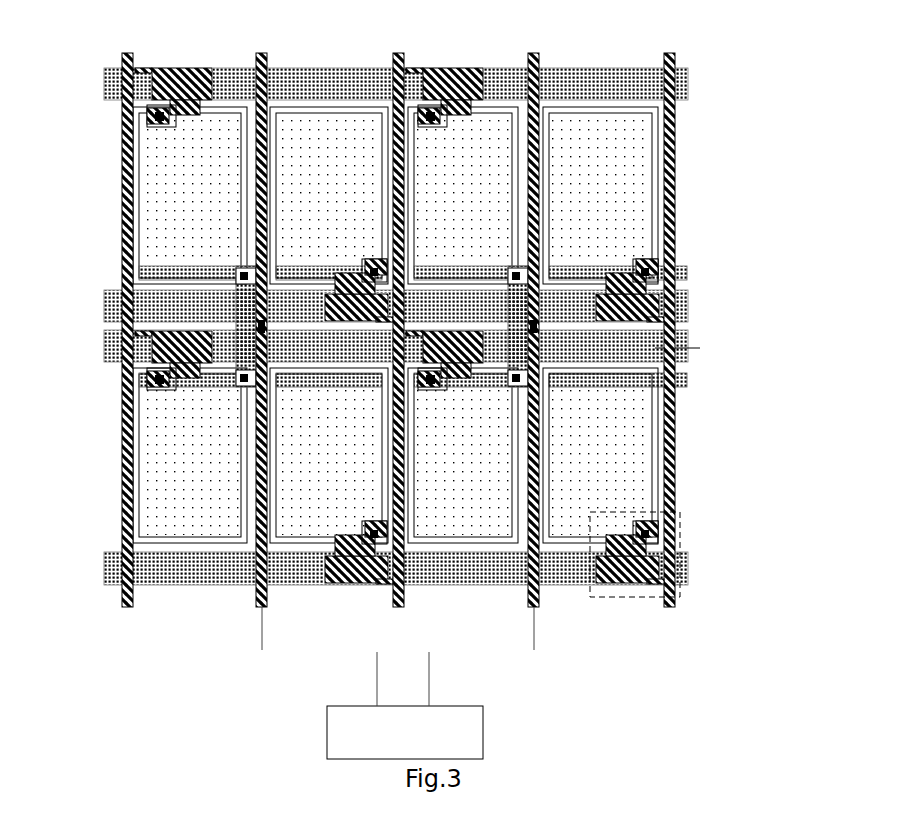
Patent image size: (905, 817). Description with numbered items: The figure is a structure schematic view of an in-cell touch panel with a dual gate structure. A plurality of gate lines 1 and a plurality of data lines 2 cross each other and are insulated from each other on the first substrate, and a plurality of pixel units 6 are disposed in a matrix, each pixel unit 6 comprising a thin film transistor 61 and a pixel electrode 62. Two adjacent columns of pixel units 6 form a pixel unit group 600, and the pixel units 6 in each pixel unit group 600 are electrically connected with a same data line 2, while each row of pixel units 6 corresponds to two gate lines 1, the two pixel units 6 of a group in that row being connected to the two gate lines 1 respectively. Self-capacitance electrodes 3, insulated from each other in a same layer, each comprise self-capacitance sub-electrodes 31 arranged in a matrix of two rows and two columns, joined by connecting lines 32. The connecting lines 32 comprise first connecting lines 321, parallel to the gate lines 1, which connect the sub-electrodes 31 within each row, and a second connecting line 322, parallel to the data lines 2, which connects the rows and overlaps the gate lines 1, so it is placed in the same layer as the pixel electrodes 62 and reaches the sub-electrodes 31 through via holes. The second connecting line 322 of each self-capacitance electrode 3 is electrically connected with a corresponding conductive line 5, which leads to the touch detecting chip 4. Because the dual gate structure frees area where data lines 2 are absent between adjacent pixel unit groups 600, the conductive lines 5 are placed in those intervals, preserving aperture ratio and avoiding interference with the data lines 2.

The gate line 1 is at (104, 85).
The data line 2 is at (130, 53).
The conductive line 5 is at (263, 53).
The pixel unit group 600 is at (520, 32).
The self-capacitance electrode 3 is at (467, 325).
The self-capacitance sub-electrode 31 is at (657, 165).
The connecting line 32 is at (458, 310).
The first connecting line 321 is at (722, 254).
The second connecting line 322 is at (700, 347).
The pixel unit 6 is at (626, 530).
The thin film transistor 61 is at (607, 653).
The pixel electrode 62 is at (565, 517).
The touch detecting chip 4 is at (468, 738).